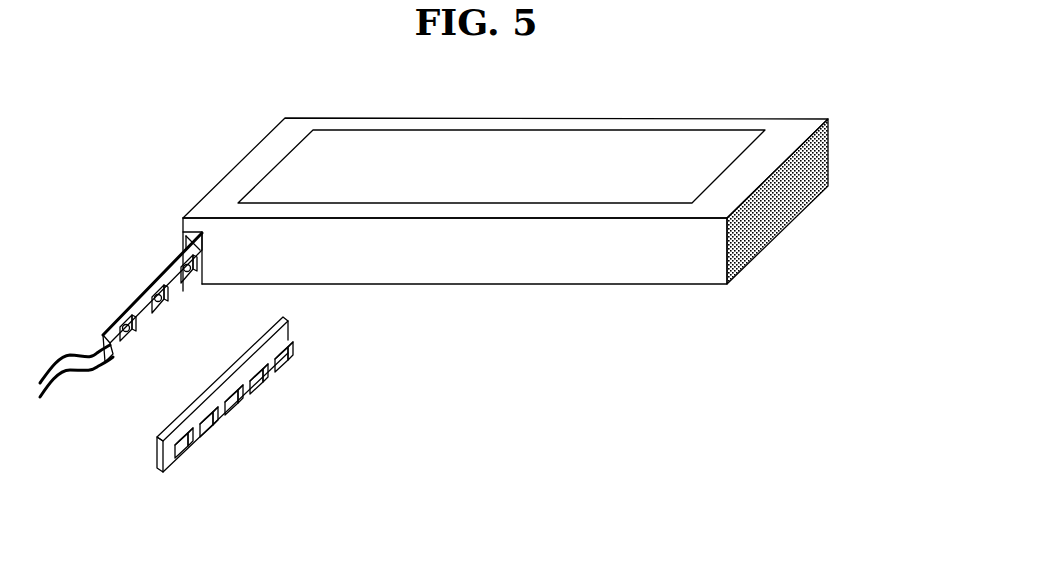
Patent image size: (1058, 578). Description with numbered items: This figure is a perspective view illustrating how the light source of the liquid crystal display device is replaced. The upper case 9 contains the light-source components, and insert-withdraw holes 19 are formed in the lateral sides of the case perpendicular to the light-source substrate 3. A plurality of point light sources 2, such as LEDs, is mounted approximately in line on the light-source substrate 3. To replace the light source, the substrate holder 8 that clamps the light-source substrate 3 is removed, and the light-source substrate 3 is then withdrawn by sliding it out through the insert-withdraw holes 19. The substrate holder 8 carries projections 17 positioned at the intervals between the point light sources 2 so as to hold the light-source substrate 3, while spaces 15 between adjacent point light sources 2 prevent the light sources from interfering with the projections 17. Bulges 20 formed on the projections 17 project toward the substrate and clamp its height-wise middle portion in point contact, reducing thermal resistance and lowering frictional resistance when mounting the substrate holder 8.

The upper case 9 is at (795, 128).
The insert-withdraw holes 19 is at (178, 235).
The point light sources 2 is at (134, 282).
The light-source substrate 3 is at (69, 323).
The bulges 20 is at (155, 347).
The substrate holder 8 is at (172, 410).
The spaces 15 is at (267, 438).
The projections 17 is at (313, 397).